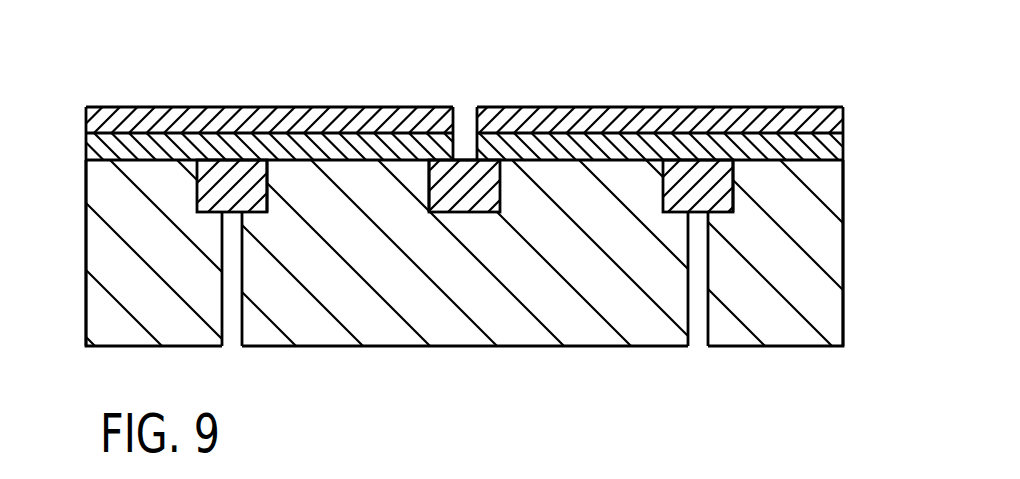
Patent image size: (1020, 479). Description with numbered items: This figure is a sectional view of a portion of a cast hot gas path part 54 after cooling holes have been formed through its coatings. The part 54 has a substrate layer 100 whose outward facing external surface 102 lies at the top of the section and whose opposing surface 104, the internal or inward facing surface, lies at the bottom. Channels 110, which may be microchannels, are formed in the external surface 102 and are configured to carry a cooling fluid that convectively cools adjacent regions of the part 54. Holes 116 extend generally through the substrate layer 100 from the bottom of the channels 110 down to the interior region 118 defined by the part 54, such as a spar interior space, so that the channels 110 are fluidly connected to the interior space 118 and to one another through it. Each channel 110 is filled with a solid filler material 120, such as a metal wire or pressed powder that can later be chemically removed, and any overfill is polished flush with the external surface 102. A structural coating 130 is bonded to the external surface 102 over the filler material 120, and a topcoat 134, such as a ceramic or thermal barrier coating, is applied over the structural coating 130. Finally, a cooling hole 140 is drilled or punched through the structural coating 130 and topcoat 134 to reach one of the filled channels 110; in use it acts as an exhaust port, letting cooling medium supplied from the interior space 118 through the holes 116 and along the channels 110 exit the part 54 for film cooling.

The part 54 is at (870, 90).
The substrate layer 100 is at (845, 240).
The external surface 102 is at (575, 160).
The opposing surface 104 is at (483, 290).
The channels 110 is at (429, 193).
The holes 116 is at (233, 344).
The interior region 118 is at (488, 379).
The filler material 120 is at (216, 170).
The structural coating 130 is at (86, 147).
The topcoat 134 is at (818, 107).
The cooling holes 140 is at (465, 118).